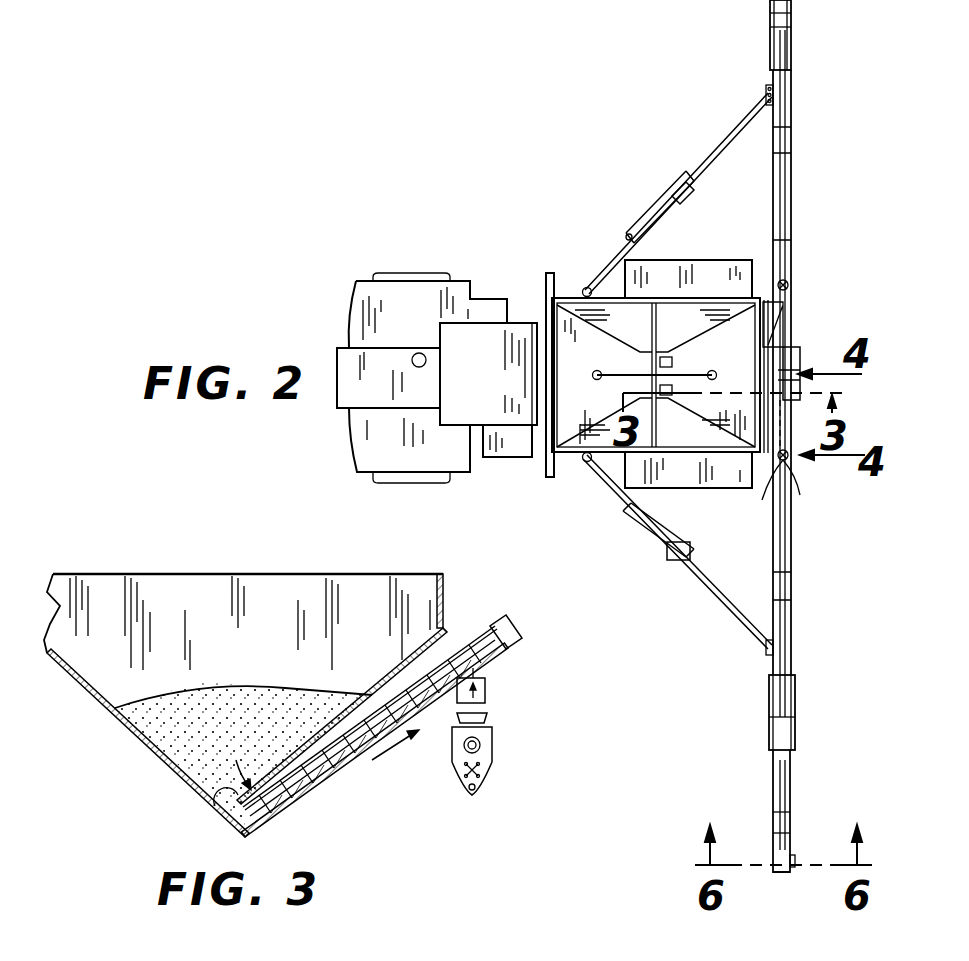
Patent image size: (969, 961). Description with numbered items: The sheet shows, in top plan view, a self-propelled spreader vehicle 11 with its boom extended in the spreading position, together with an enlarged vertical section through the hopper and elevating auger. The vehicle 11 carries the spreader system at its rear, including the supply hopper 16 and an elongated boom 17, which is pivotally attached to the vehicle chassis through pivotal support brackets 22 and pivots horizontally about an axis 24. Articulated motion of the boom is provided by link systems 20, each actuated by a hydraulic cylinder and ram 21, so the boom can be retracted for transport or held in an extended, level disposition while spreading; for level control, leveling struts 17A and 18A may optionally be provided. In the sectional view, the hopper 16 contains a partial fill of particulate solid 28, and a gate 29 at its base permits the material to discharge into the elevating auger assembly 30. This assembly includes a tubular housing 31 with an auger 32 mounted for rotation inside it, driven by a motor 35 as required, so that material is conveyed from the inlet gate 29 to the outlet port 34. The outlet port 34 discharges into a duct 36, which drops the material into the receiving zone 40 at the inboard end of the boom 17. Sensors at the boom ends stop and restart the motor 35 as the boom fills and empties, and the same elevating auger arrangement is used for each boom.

In FIG. 2, the self-propelled vehicle 11 is at (480, 374).
In FIG. 3, the supply hopper 16 is at (444, 592).
In FIG. 2, the boom 17 is at (792, 553).
In FIG. 3, the boom 17 is at (494, 755).
In FIG. 2, the leveling strut 17A is at (790, 622).
In FIG. 2, the leveling strut 18A is at (786, 108).
In FIG. 2, the link system 20 is at (727, 135).
In FIG. 2, the hydraulic cylinder and ram 21 is at (640, 222).
In FIG. 2, the pivotal support bracket 22 is at (770, 295).
In FIG. 2, the horizontal pivot axis 24 is at (788, 287).
In FIG. 3, the particulate solid 28 is at (255, 698).
In FIG. 3, the gate 29 is at (225, 800).
In FIG. 3, the elevating auger assembly 30 is at (293, 806).
In FIG. 3, the tubular housing 31 is at (349, 762).
In FIG. 3, the auger 32 is at (411, 740).
In FIG. 3, the outlet port 34 is at (487, 692).
In FIG. 3, the motor 35 is at (522, 637).
In FIG. 3, the duct 36 is at (489, 718).
In FIG. 2, the receiving zone 40 is at (792, 383).